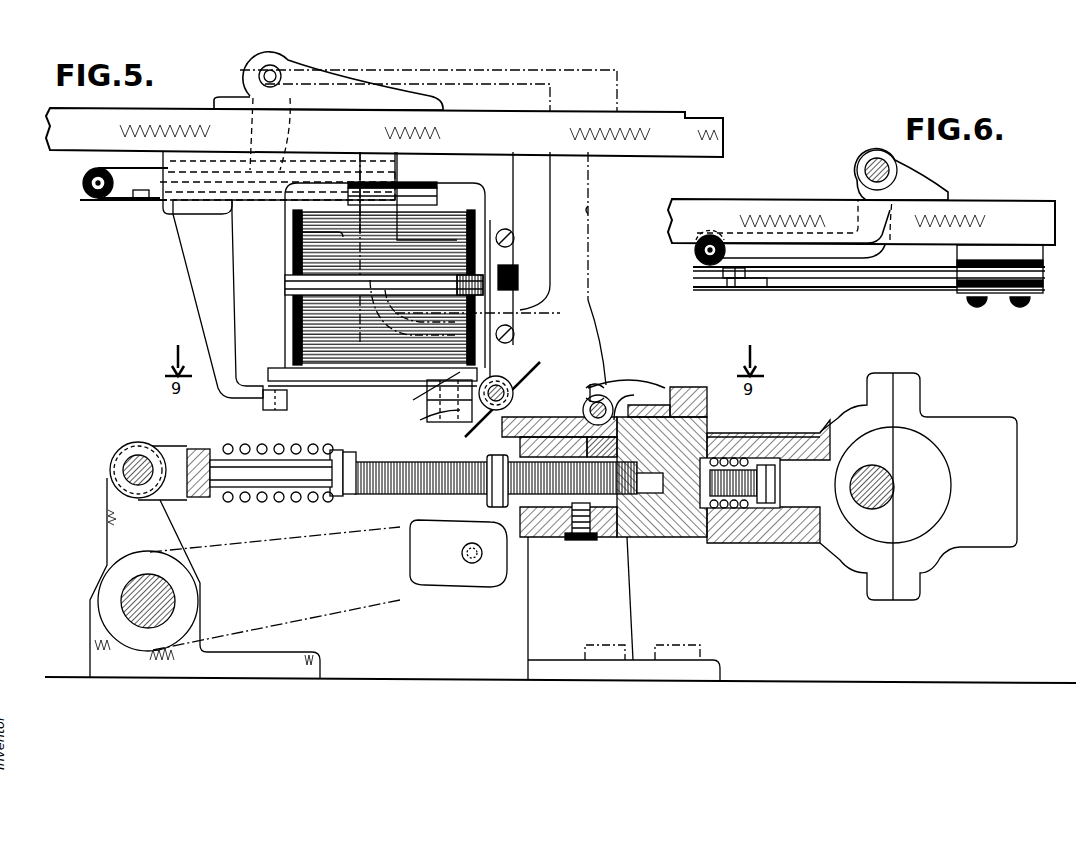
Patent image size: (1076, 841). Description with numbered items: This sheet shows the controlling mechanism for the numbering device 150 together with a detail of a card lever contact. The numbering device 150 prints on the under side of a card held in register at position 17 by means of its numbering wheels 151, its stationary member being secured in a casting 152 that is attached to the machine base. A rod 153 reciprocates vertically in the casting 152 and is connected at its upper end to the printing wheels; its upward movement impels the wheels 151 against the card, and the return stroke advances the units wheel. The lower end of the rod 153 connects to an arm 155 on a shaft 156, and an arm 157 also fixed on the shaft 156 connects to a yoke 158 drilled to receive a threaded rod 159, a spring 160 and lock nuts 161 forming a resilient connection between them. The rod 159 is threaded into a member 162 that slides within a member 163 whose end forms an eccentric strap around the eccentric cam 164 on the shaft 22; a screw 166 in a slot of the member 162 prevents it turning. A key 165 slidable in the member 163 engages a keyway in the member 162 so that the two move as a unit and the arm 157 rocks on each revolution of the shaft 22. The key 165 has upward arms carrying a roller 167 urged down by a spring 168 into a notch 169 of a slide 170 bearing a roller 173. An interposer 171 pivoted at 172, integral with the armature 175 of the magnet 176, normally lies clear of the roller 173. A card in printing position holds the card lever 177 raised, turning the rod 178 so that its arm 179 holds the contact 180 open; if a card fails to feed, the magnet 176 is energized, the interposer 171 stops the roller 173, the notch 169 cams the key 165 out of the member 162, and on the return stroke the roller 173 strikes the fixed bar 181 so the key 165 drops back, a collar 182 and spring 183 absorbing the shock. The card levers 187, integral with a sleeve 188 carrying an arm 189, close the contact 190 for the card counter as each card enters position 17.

In FIG. 5, the card position 17 is at (452, 70).
In FIG. 5, the shaft 22 is at (886, 484).
In FIG. 5, the numbering device 150 is at (592, 302).
In FIG. 5, the numbering wheels 151 is at (483, 118).
In FIG. 5, the casting 152 is at (590, 210).
In FIG. 5, the rod 153 is at (420, 396).
In FIG. 5, the arm 155 is at (392, 600).
In FIG. 5, the shaft 156 is at (145, 601).
In FIG. 5, the arm 157 is at (118, 523).
In FIG. 5, the yoke 158 is at (168, 455).
In FIG. 5, the threaded rod 159 is at (236, 498).
In FIG. 5, the spring 160 is at (282, 452).
In FIG. 5, the lock nuts 161 is at (340, 452).
In FIG. 5, the member 162 is at (690, 488).
In FIG. 5, the member 163 is at (760, 527).
In FIG. 5, the eccentric cam 164 is at (875, 523).
In FIG. 5, the key 165 is at (584, 410).
In FIG. 5, the screw 166 is at (630, 382).
In FIG. 5, the roller 167 is at (588, 388).
In FIG. 5, the spring 168 is at (678, 387).
In FIG. 5, the notch 169 is at (637, 403).
In FIG. 5, the slide 170 is at (528, 440).
In FIG. 5, the interposer 171 is at (429, 411).
In FIG. 5, the pivot 172 is at (260, 405).
In FIG. 5, the roller 173 is at (541, 360).
In FIG. 5, the armature 175 is at (228, 266).
In FIG. 5, the magnet 176 is at (303, 232).
In FIG. 5, the card lever 177 is at (312, 94).
In FIG. 5, the rod 178 is at (266, 74).
In FIG. 6, the rod 178 is at (865, 174).
In FIG. 5, the arm 179 is at (112, 178).
In FIG. 5, the contact 180 is at (142, 202).
In FIG. 5, the fixed bar 181 is at (512, 383).
In FIG. 5, the collar 182 is at (733, 442).
In FIG. 5, the spring 183 is at (770, 452).
In FIG. 6, the card levers 187 is at (925, 192).
In FIG. 6, the sleeve 188 is at (890, 168).
In FIG. 6, the arm 189 is at (768, 255).
In FIG. 6, the contact 190 is at (742, 292).